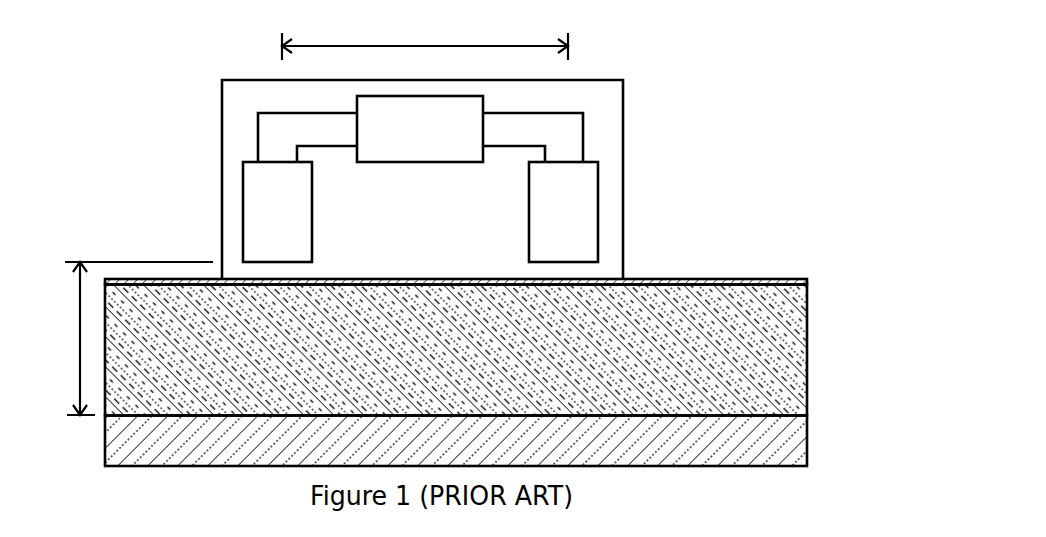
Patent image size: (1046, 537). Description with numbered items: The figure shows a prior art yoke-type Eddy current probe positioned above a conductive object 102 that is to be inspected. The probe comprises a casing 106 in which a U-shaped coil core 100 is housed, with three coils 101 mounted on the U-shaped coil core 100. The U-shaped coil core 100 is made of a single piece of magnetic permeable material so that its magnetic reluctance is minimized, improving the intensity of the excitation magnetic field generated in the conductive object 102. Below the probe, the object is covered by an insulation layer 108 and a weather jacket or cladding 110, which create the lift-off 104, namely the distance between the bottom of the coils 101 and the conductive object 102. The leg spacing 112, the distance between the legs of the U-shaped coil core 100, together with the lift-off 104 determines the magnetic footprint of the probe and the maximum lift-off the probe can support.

The U-shaped coil core 100 is at (312, 112).
The coils 101 is at (422, 163).
The conductive object 102 is at (808, 443).
The lift-off 104 is at (80, 361).
The casing 106 is at (222, 178).
The insulation layer 108 is at (808, 348).
The weather jacket or cladding 110 is at (808, 283).
The leg spacing 112 is at (426, 46).